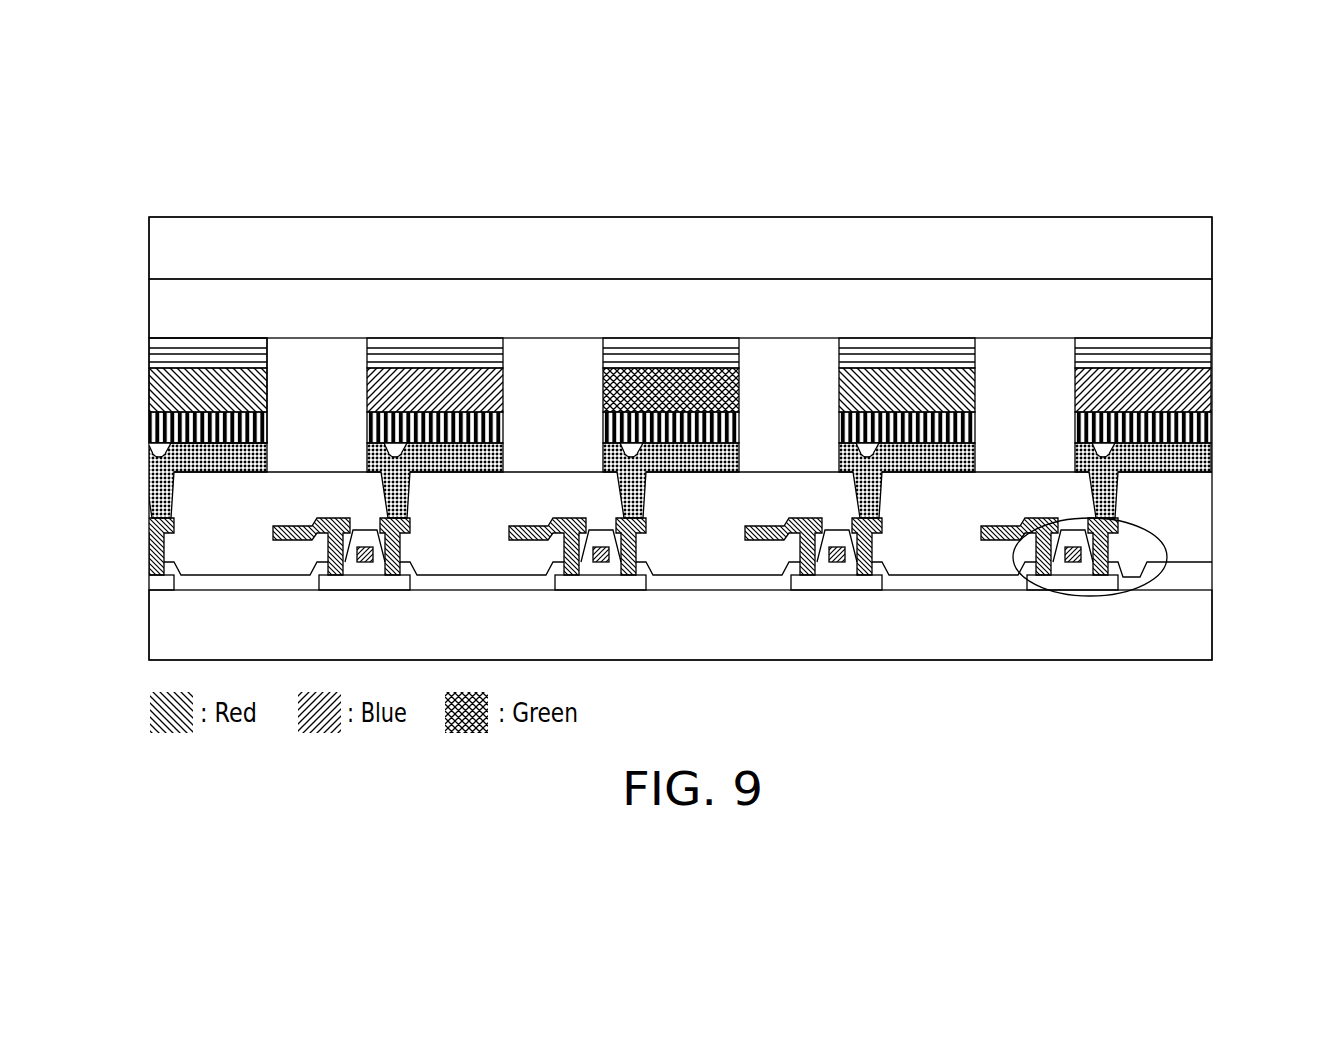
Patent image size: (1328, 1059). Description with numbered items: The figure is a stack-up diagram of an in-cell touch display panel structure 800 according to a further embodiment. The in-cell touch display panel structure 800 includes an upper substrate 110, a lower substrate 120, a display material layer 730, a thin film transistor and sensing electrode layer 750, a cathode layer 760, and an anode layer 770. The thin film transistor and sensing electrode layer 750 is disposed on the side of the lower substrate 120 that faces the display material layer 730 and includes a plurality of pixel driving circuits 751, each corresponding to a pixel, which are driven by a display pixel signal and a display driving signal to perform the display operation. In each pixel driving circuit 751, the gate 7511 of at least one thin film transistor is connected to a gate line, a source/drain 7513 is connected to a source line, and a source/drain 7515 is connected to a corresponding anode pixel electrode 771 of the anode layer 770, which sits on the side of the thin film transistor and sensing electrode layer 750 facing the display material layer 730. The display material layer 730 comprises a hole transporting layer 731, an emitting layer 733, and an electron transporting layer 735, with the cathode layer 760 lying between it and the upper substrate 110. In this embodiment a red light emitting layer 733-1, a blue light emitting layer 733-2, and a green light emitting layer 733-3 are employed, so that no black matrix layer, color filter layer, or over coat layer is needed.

The in-cell touch display panel structure 800 is at (142, 198).
The upper substrate 110 is at (1182, 251).
The cathode layer 760 is at (1120, 320).
The display material layer 730 is at (140, 340).
The electron transporting layer 735 is at (1152, 358).
The emitting layer 733 is at (1165, 398).
The red light emitting layer 733-1 is at (268, 388).
The blue light emitting layer 733-2 is at (503, 388).
The green light emitting layer 733-3 is at (738, 385).
The hole transporting layer 731 is at (1165, 438).
The anode layer 770 is at (1175, 457).
The anode pixel electrode 771 is at (1090, 453).
The thin film transistor and sensing electrode layer 750 is at (1213, 477).
The pixel driving circuit 751 is at (645, 559).
The gate 7511 is at (1068, 557).
The source/drain 7513 is at (1033, 535).
The source/drain 7515 is at (1107, 543).
The lower substrate 120 is at (1213, 623).